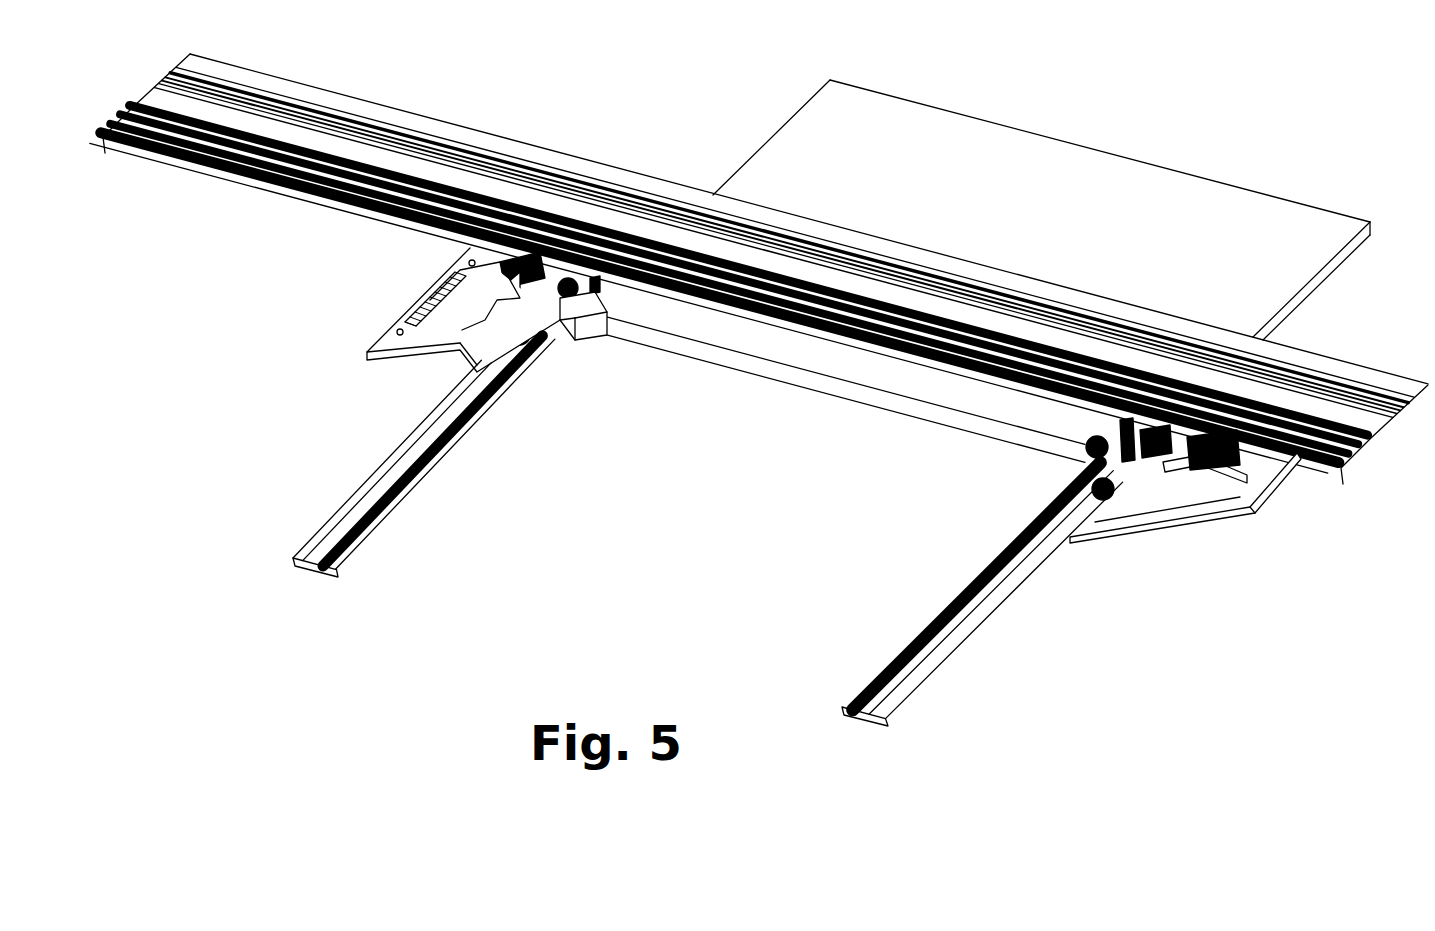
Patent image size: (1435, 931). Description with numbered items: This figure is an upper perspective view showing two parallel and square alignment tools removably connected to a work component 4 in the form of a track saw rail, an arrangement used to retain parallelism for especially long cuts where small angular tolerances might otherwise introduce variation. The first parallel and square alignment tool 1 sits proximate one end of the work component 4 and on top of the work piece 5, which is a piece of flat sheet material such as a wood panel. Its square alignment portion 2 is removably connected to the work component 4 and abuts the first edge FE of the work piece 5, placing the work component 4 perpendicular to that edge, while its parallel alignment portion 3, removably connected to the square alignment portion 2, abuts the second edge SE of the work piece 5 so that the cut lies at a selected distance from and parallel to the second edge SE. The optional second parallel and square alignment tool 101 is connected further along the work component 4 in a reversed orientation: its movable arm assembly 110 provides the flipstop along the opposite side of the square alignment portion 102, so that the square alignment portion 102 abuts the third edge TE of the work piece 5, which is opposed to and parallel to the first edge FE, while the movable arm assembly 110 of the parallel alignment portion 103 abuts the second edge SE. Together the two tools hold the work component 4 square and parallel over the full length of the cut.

The parallel and square alignment tool 1 is at (1067, 593).
The square alignment portion 2 is at (1277, 493).
The parallel alignment portion 3 is at (1068, 480).
The work component 4 is at (1382, 423).
The work piece 5 is at (1197, 192).
The second parallel and square alignment tool 101 is at (413, 390).
The square alignment portion 102 is at (402, 312).
The parallel alignment portion 103 is at (567, 352).
The movable arm assembly 110 is at (598, 340).
The third edge TE is at (752, 147).
The first edge FE is at (1310, 288).
The second edge SE is at (840, 387).